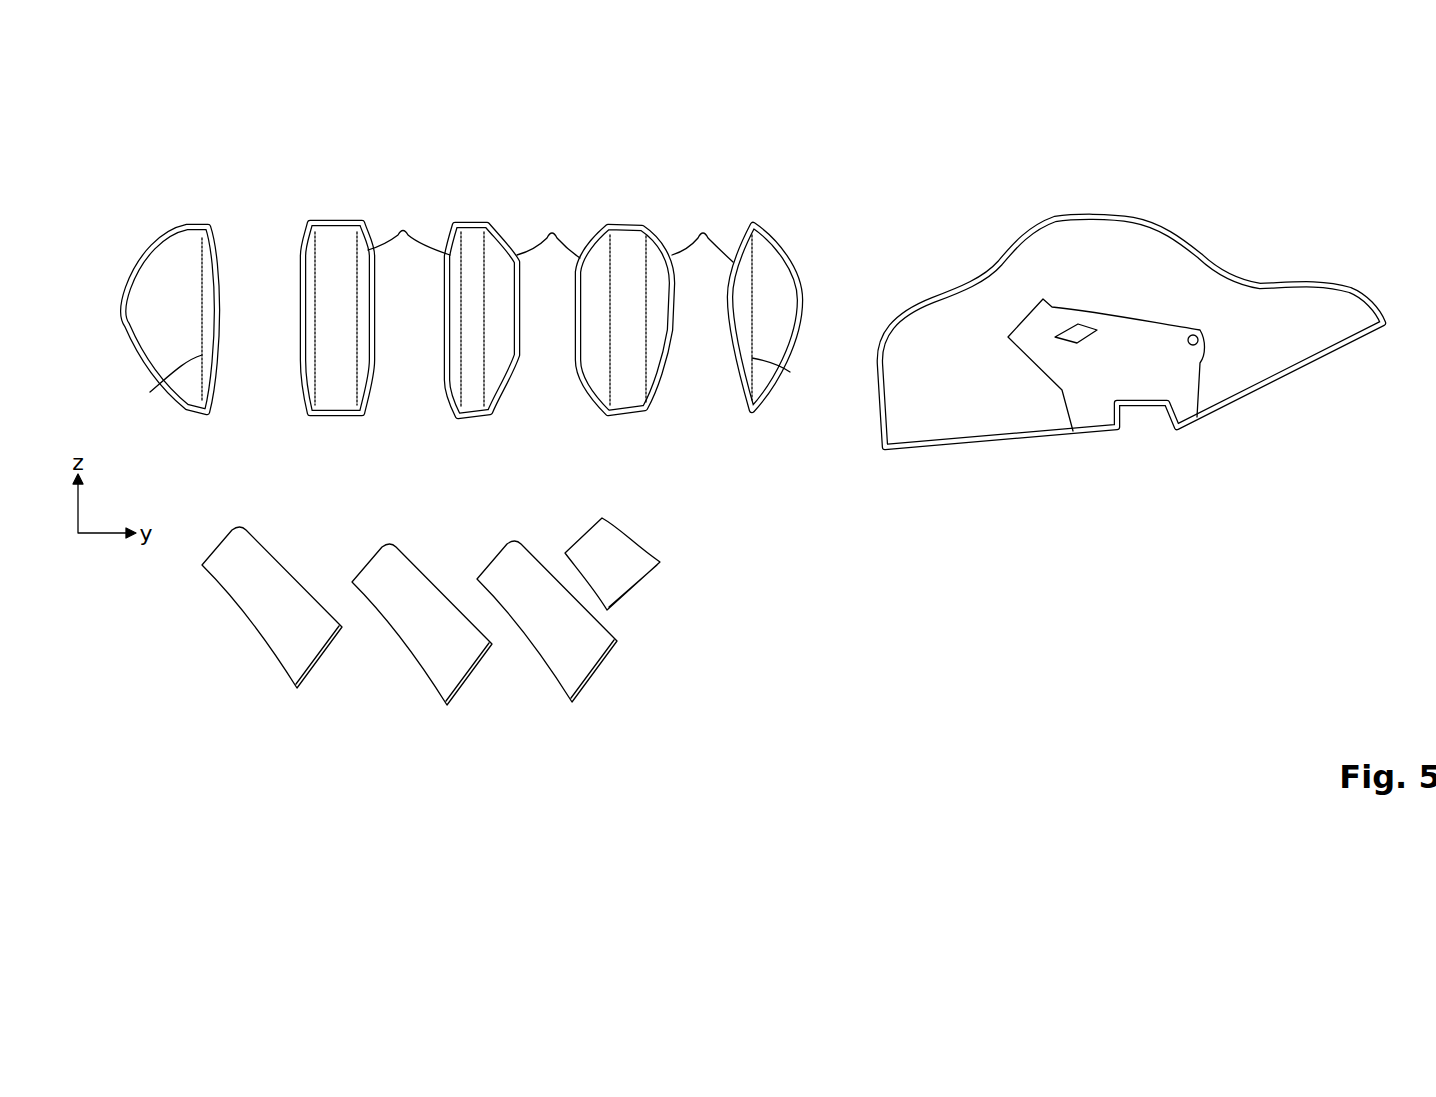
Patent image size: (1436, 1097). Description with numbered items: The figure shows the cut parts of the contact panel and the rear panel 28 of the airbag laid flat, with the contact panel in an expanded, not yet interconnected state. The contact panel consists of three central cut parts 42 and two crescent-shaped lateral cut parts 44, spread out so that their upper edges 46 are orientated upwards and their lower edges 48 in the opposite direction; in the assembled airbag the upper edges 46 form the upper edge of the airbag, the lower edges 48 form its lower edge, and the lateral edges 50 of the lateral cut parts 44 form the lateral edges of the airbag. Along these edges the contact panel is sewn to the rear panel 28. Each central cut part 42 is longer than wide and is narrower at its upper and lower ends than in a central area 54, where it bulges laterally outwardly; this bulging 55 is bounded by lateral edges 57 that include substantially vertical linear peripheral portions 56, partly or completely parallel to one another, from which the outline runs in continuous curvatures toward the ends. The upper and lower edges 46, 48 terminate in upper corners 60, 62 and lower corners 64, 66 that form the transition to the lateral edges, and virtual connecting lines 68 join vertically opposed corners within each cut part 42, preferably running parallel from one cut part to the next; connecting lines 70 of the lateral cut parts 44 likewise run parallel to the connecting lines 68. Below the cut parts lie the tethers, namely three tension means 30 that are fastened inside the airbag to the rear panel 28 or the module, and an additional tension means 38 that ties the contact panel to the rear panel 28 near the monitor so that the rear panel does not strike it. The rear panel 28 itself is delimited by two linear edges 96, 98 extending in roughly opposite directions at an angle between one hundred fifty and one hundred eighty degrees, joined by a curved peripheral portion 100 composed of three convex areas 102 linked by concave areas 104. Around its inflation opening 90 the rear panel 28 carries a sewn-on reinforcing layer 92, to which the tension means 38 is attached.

The rear panel 28 is at (1150, 244).
The tension means 30 is at (270, 640).
The tension means 38 is at (645, 585).
The central cut parts 42 is at (358, 195).
The lateral cut parts 44 is at (193, 212).
The upper edges 46 is at (166, 228).
The lower edges 48 is at (338, 418).
The lateral edges 50 is at (132, 330).
The central area 54 is at (320, 339).
The bulging 55 is at (212, 265).
The linear peripheral portions 56 is at (295, 388).
The lateral edges 57 is at (268, 318).
The upper corner 60 is at (308, 223).
The upper corner 62 is at (365, 222).
The lower corner 64 is at (308, 418).
The lower corner 66 is at (360, 418).
The virtual connecting lines 68 is at (313, 334).
The connecting lines 70 is at (150, 392).
The inflation opening 90 is at (1137, 419).
The reinforcing layer 92 is at (1178, 368).
The linear edge 96 is at (978, 442).
The linear edge 98 is at (1310, 365).
The curved peripheral portion 100 is at (1366, 282).
The convex areas 102 is at (1085, 218).
The concave areas 104 is at (982, 284).